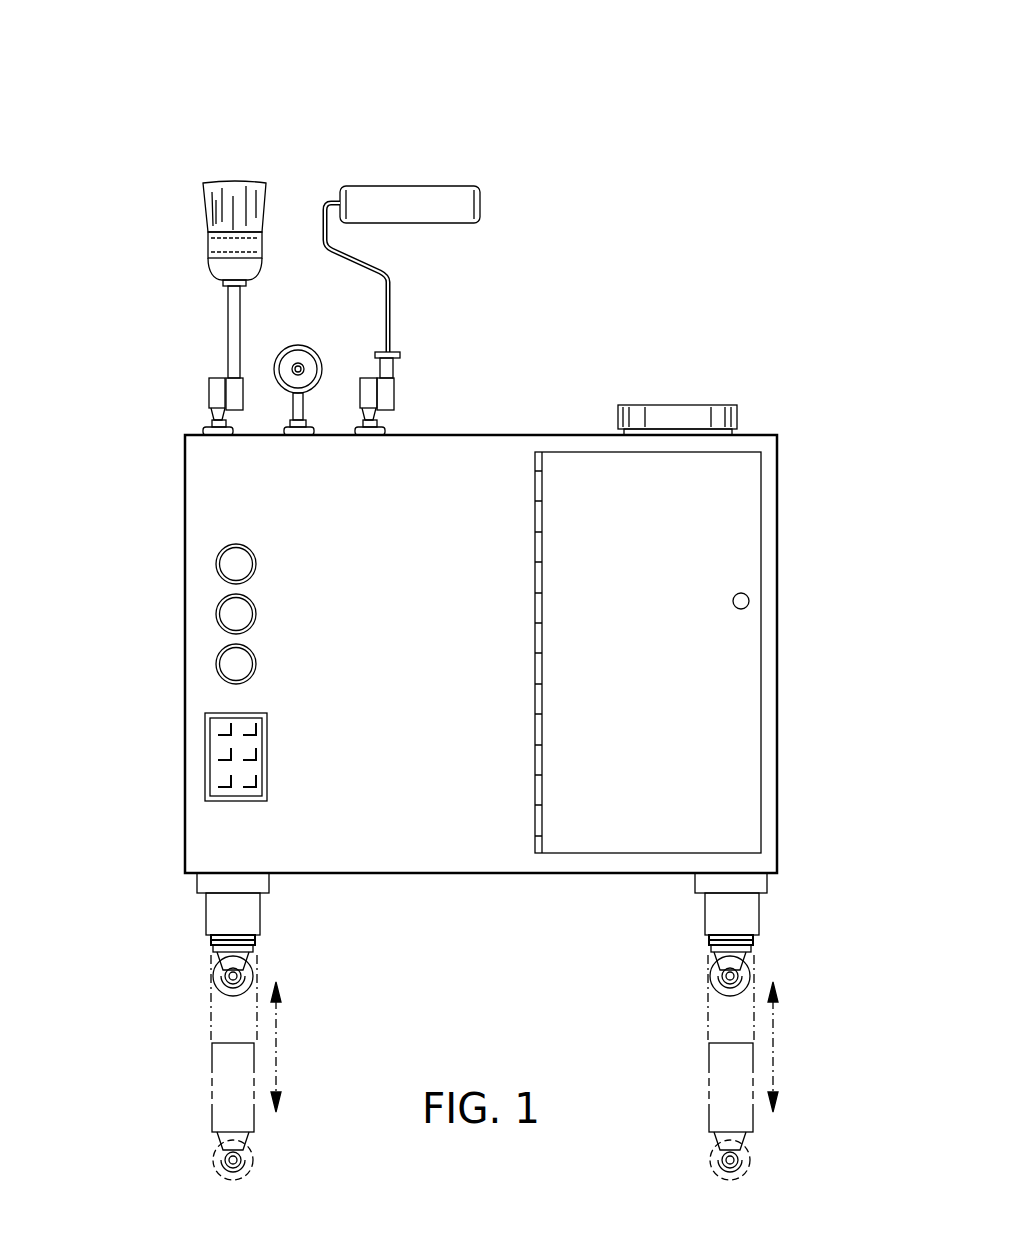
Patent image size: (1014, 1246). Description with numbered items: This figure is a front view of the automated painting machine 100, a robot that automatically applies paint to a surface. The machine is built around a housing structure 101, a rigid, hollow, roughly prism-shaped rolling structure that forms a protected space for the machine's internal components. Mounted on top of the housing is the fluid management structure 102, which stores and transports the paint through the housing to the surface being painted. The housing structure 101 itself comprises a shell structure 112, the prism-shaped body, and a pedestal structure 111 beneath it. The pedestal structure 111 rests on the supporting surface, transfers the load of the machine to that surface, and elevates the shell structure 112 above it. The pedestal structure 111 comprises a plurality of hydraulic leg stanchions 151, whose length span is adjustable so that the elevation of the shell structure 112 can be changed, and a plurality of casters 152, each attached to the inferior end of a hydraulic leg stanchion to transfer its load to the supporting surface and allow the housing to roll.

The automated painting machine 100 is at (106, 96).
The housing structure 101 is at (827, 611).
The fluid management structure 102 is at (498, 192).
The pedestal structure 111 is at (795, 945).
The shell structure 112 is at (808, 695).
The plurality of hydraulic leg stanchions 151 is at (250, 921).
The plurality of casters 152 is at (255, 975).